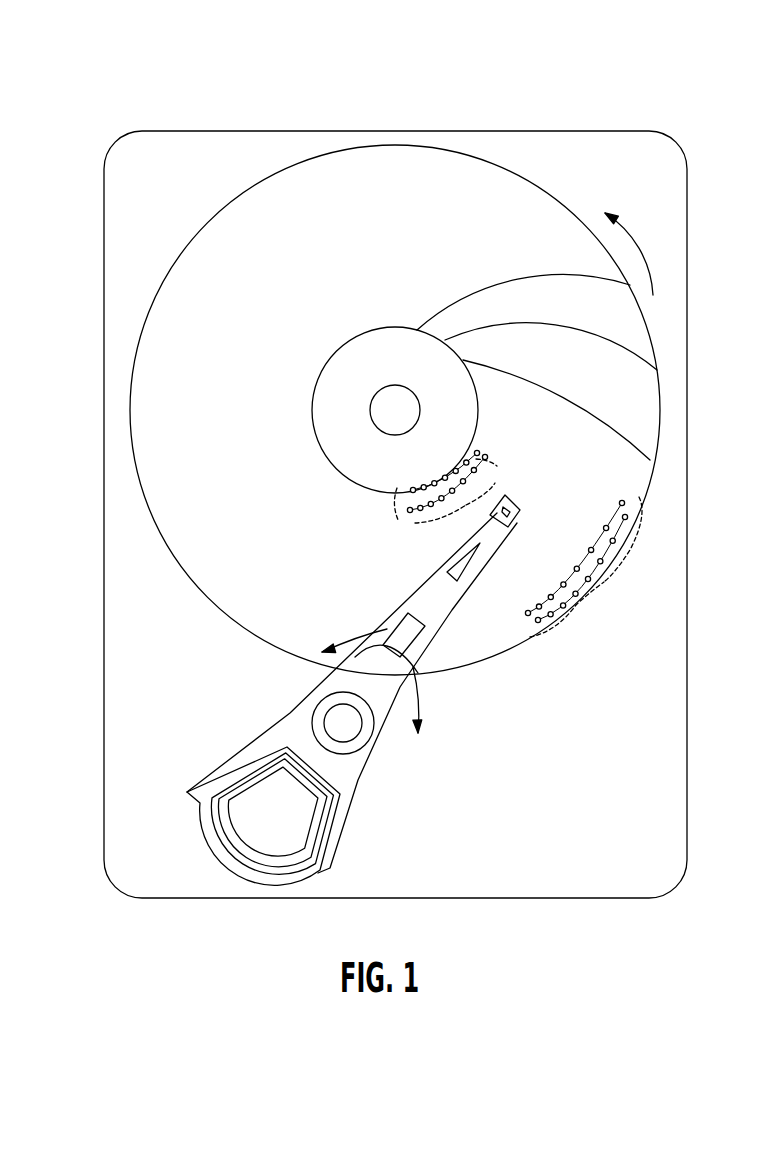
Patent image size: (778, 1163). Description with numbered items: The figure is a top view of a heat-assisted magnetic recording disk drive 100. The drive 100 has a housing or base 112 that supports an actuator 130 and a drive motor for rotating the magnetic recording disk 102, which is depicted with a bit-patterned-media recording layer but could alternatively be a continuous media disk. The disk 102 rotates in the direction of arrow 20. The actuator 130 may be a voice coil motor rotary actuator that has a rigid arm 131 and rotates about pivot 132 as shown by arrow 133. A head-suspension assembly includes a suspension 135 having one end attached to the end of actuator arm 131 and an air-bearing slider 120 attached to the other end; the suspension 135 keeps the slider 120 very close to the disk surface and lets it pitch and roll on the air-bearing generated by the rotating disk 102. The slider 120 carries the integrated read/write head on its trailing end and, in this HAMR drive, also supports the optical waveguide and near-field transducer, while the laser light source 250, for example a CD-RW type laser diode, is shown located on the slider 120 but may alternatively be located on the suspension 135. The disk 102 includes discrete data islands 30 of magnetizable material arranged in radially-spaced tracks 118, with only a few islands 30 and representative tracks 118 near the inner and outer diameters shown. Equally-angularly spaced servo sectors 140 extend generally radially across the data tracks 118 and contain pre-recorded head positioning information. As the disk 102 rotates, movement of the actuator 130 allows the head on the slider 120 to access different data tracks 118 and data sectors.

The HAMR disk drive 100 is at (128, 45).
The housing or base 112 is at (615, 131).
The disk 102 is at (258, 185).
The arrow 20 is at (628, 233).
The servo sectors 140 is at (535, 276).
The tracks 118 is at (387, 513).
The data islands 30 is at (495, 483).
The actuator 130 is at (190, 777).
The pivot 132 is at (333, 718).
The suspension 135 is at (440, 577).
The air-bearing slider 120 is at (516, 520).
The laser light source 250 is at (521, 509).
The rigid arm 131 is at (385, 627).
The arrow 133 is at (420, 703).